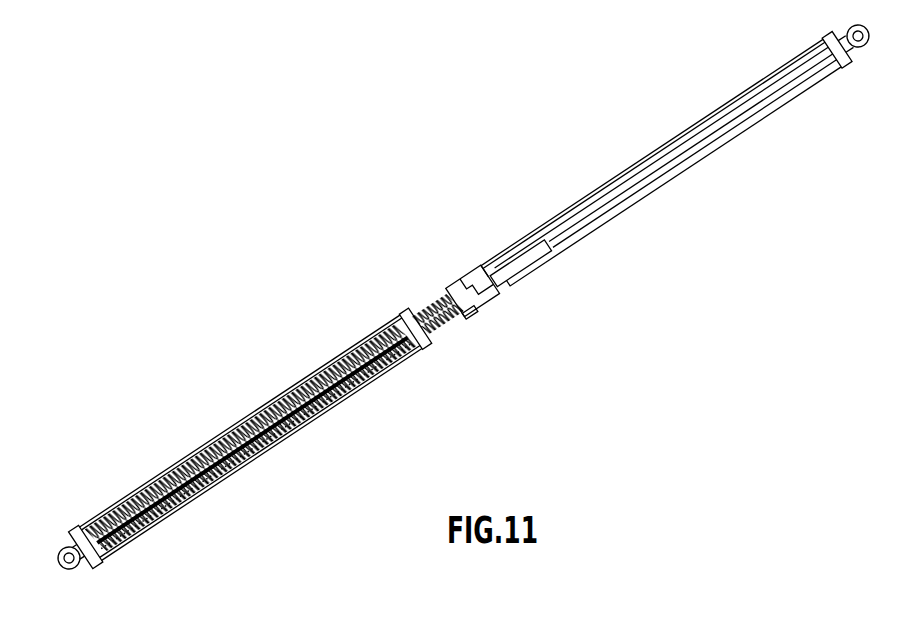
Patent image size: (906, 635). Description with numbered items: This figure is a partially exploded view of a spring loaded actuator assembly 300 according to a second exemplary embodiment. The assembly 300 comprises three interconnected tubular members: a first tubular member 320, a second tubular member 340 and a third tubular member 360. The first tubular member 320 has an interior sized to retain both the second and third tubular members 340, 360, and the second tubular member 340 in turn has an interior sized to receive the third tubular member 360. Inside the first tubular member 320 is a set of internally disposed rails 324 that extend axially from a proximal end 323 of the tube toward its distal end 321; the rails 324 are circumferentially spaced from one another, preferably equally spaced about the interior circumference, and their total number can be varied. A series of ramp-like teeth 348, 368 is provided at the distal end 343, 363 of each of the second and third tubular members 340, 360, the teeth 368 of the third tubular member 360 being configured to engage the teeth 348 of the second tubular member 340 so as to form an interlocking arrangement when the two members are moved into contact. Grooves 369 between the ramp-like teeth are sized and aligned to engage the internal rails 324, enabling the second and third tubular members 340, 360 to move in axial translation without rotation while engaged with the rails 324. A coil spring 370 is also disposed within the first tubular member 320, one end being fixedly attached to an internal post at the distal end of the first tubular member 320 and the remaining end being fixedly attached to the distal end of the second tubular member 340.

The spring loaded actuator assembly 300 is at (165, 171).
The first tubular member 320 is at (179, 460).
The distal end 321 is at (90, 525).
The proximal end 323 is at (403, 313).
The internally disposed rails 324 is at (177, 507).
The second tubular member 340 is at (470, 273).
The distal end 343 is at (470, 314).
The ramp-like teeth 348 is at (452, 290).
The third tubular member 360 is at (633, 166).
The distal end 363 is at (507, 246).
The ramp-like teeth 368 is at (522, 282).
The grooves 369 is at (547, 256).
The coil spring 370 is at (444, 323).